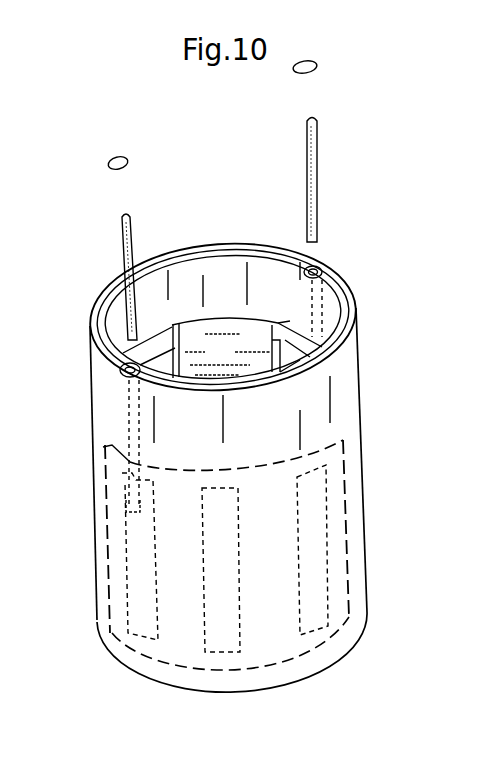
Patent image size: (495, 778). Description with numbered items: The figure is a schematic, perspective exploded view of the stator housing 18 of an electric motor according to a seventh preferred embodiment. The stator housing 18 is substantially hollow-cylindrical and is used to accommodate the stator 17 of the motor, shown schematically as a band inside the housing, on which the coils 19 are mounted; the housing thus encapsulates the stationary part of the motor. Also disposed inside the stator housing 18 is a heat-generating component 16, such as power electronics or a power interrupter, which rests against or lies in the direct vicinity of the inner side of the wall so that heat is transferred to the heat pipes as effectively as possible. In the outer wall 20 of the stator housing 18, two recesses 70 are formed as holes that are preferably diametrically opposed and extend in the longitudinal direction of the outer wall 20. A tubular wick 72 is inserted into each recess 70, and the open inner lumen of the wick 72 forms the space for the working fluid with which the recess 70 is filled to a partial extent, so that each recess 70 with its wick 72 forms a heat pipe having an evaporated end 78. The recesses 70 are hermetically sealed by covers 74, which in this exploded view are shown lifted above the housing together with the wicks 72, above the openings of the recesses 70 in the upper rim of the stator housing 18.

The heat-generating component 16 is at (278, 328).
The stator 17 is at (346, 548).
The stator housing 18 is at (290, 593).
The coils 19 is at (145, 633).
The outer wall 20 is at (357, 383).
The recess 70 is at (121, 370).
The tubular wick 72 is at (122, 232).
The cover 74 is at (128, 160).
The evaporated end 78 is at (136, 512).